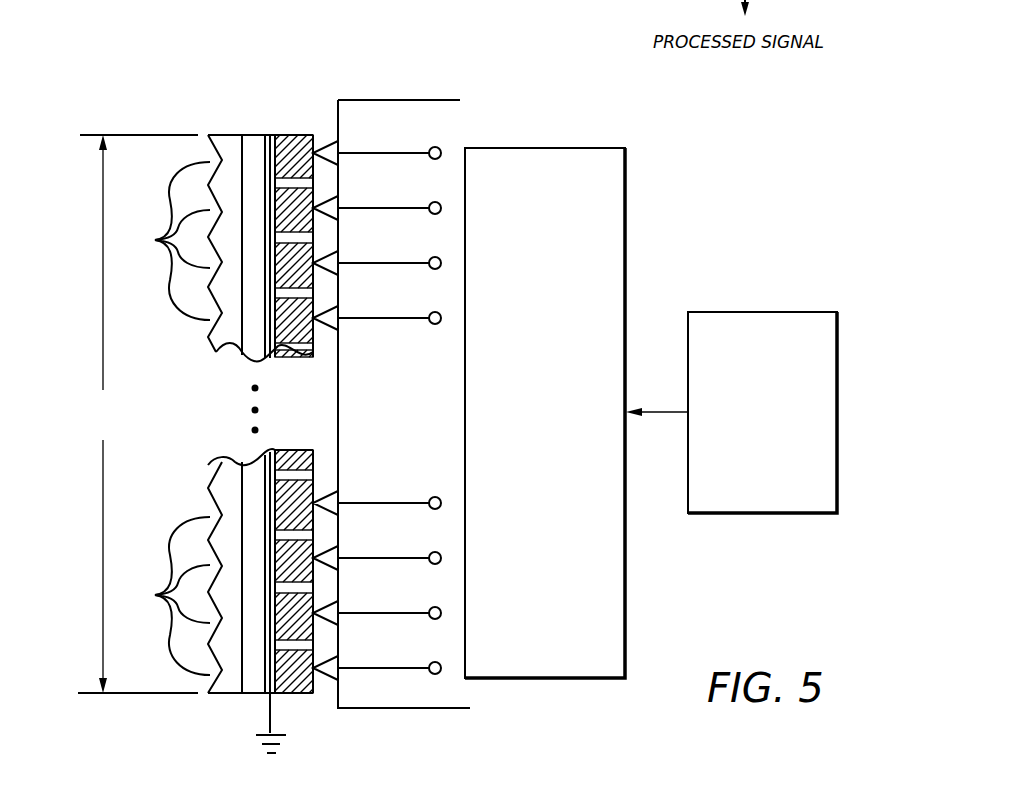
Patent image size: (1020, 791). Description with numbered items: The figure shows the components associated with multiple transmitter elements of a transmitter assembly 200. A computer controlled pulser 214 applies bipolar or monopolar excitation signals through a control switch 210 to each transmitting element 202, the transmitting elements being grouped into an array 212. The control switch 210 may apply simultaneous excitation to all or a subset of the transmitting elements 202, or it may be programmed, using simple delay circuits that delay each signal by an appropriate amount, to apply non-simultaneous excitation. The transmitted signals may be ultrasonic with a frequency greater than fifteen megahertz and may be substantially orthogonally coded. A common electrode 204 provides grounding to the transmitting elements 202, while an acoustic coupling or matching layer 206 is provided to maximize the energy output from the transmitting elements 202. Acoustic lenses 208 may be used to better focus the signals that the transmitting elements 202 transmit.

The transducer array assembly 200 is at (176, 95).
The transmitting element 202 is at (295, 147).
The common electrode 204 is at (270, 137).
The acoustic coupling or matching layer 206 is at (252, 147).
The acoustic lens 208 is at (164, 418).
The control switch 210 is at (540, 148).
The array 212 is at (122, 422).
The computer controlled pulser 214 is at (770, 312).